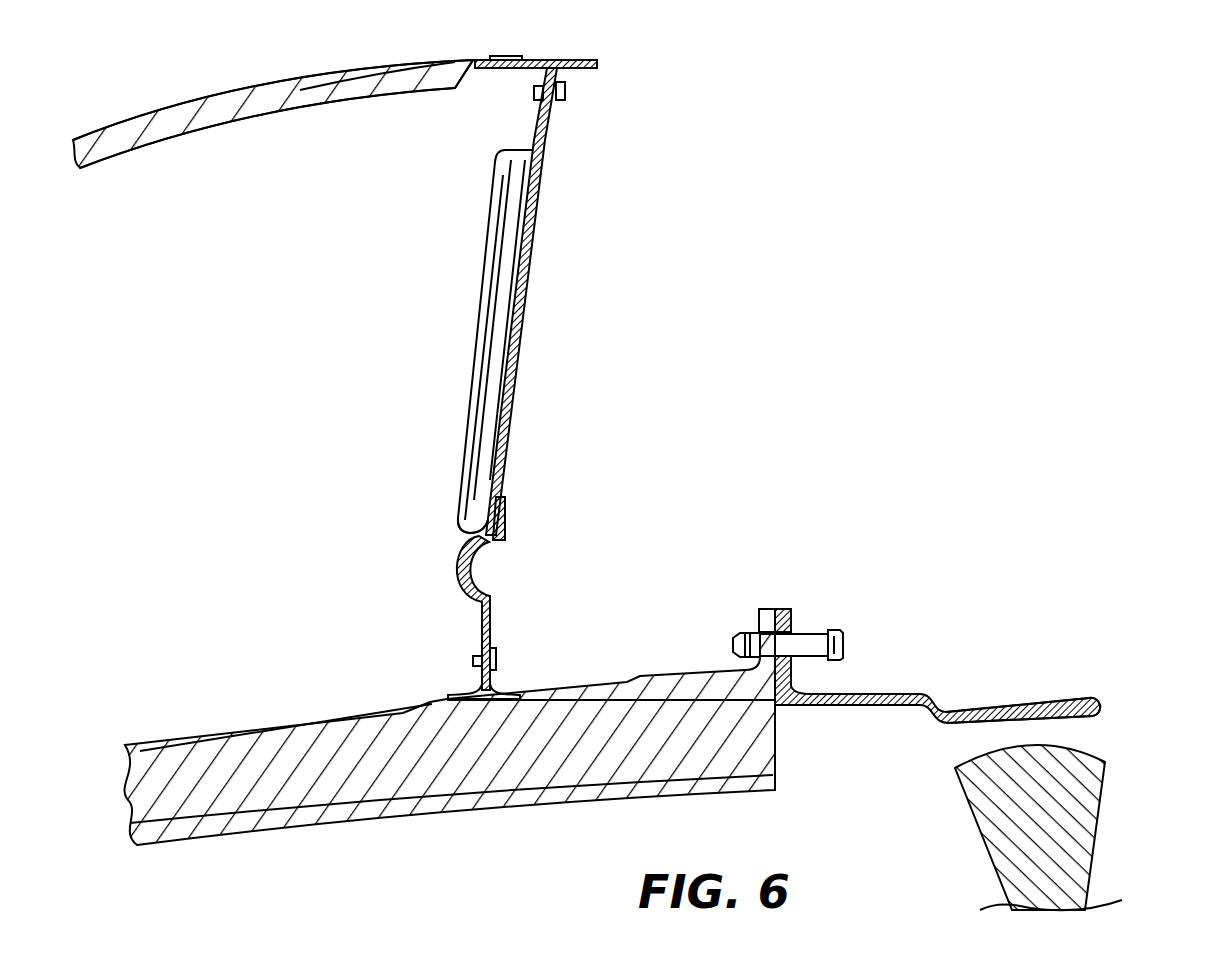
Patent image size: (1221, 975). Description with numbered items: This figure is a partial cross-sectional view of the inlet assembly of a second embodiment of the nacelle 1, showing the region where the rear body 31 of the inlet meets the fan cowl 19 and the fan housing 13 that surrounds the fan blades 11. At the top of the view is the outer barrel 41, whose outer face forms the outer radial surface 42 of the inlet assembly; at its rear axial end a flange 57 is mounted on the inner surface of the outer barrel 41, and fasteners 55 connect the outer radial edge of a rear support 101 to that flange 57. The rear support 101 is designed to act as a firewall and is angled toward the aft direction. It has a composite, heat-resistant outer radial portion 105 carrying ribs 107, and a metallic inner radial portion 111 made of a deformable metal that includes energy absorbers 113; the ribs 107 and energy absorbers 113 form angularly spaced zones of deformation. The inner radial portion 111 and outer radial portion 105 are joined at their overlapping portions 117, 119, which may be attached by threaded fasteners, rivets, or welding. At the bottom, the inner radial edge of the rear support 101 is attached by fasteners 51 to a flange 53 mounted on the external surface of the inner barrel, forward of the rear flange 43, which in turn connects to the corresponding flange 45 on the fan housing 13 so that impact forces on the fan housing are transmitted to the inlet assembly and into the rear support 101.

The nacelle 1 is at (503, 48).
The fan blades 11 is at (1090, 812).
The fan housing 13 is at (884, 694).
The fan cowl 19 is at (1013, 698).
The rear body 31 is at (235, 92).
The outer barrel 41 is at (298, 83).
The outer radial surface 42 is at (360, 78).
The flange 43 is at (765, 607).
The flange 45 is at (788, 607).
The fasteners 51 is at (496, 657).
The flange 53 is at (517, 677).
The fasteners 55 is at (535, 93).
The flange 57 is at (580, 60).
The rear support 101 is at (515, 452).
The outer radial portion 105 is at (533, 224).
The ribs 107 is at (470, 382).
The inner radial portion 111 is at (492, 608).
The energy absorbers 113 is at (457, 588).
The overlapping portion 117 is at (487, 530).
The overlapping portion 119 is at (497, 522).